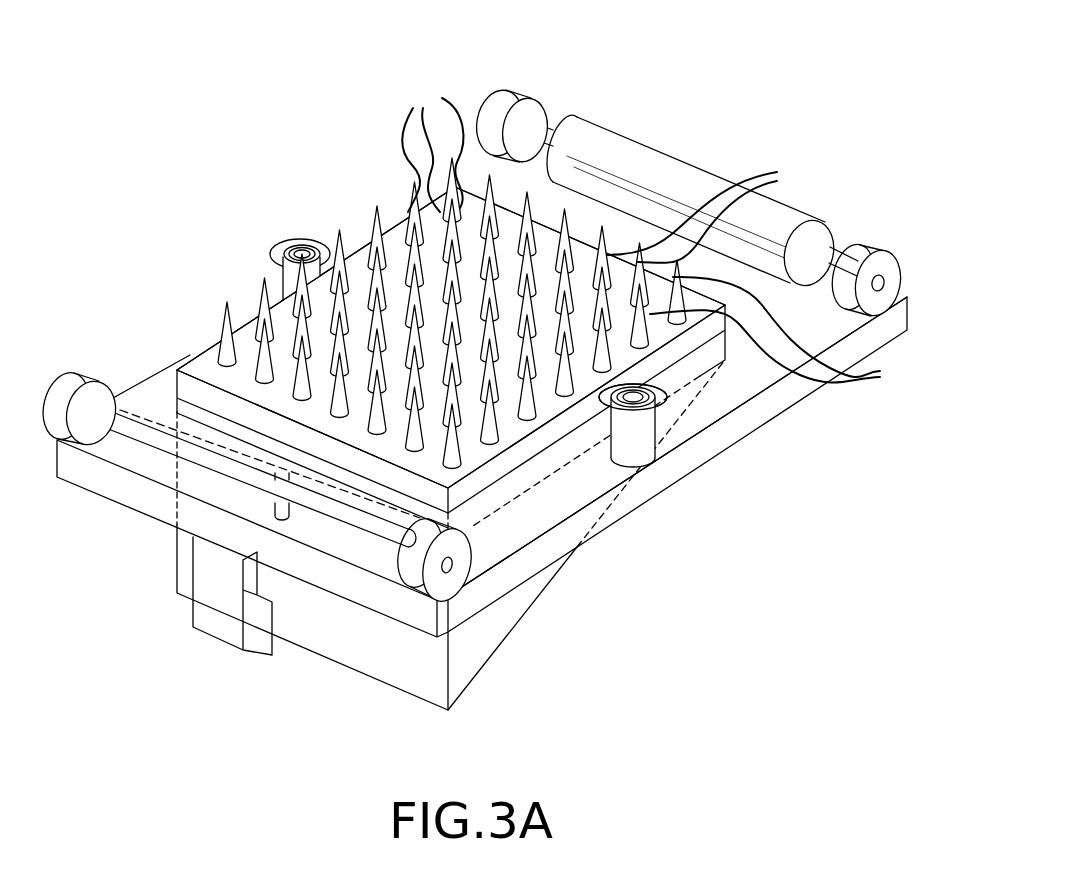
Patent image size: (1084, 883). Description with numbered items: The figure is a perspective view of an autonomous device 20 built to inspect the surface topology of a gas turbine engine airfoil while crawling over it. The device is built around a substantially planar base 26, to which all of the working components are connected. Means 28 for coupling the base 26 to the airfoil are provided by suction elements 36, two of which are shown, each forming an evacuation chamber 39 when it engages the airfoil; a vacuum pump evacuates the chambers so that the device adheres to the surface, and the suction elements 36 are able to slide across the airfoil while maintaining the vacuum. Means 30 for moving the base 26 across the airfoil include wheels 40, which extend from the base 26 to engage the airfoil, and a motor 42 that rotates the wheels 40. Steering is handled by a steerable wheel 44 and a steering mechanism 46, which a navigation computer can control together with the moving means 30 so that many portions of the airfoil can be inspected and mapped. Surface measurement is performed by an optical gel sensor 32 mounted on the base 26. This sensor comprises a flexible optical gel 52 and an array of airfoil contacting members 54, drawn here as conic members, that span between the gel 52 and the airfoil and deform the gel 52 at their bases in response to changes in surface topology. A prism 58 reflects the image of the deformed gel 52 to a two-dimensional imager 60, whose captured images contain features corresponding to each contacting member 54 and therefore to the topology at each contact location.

The autonomous device 20 is at (651, 104).
The base 26 is at (800, 390).
The means for coupling the base to the airfoil 28 is at (298, 248).
The means for moving the base across the airfoil 30 is at (103, 322).
The optical gel sensor 32 is at (382, 205).
The suction element 36 is at (275, 258).
The evacuation chamber 39 is at (306, 240).
The wheel 40 is at (527, 90).
The motor 42 is at (705, 165).
The steerable wheel 44 is at (68, 370).
The steering mechanism 46 is at (275, 508).
The flexible optical gel 52 is at (513, 453).
The airfoil contacting member 54 is at (656, 230).
The prism 58 is at (520, 598).
The two-dimensional imager 60 is at (262, 624).